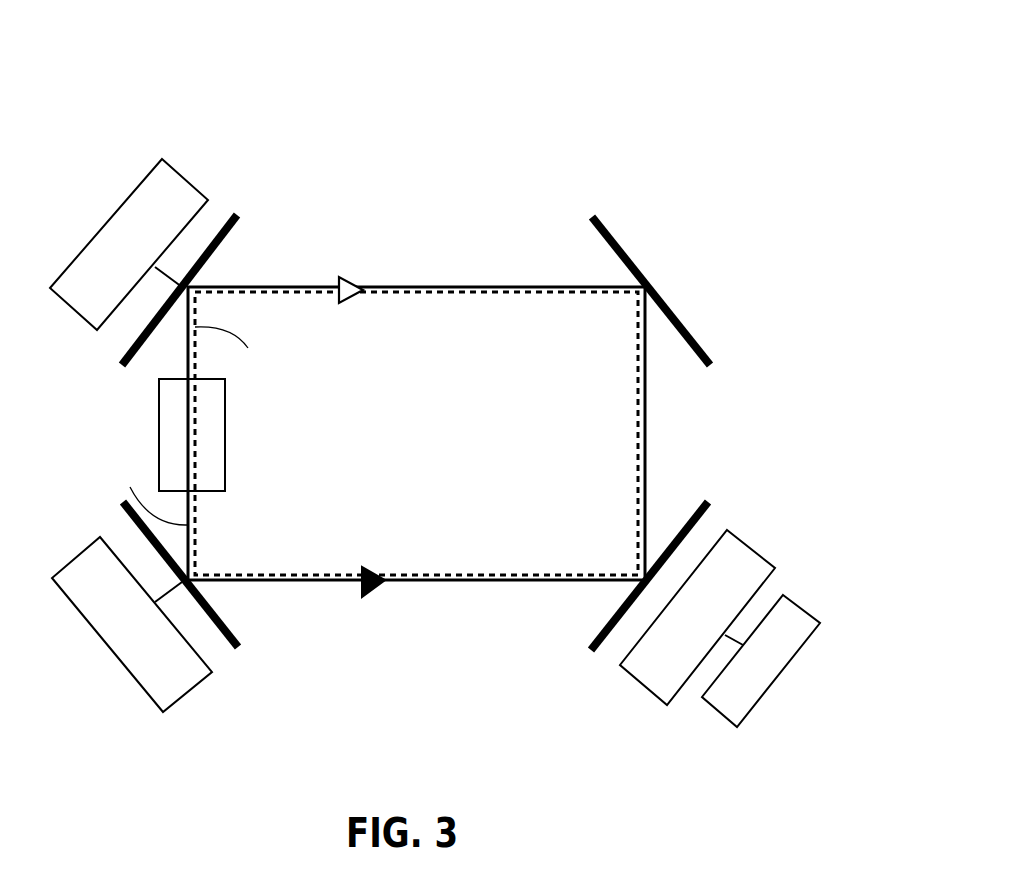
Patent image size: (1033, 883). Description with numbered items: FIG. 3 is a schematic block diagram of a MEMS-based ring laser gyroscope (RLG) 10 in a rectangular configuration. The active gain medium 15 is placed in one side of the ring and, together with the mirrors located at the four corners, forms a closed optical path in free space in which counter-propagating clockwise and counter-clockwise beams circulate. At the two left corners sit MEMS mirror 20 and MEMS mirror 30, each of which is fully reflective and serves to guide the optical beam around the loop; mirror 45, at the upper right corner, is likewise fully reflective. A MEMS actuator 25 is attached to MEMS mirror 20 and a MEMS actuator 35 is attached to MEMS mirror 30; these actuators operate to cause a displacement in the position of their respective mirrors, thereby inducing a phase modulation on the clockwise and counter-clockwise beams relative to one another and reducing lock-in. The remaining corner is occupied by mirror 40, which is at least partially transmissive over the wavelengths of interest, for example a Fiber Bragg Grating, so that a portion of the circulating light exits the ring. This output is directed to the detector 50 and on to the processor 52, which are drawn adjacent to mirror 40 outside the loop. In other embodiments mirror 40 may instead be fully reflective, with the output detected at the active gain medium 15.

The MEMS-based ring laser gyroscope 10 is at (588, 70).
The active gain medium 15 is at (159, 418).
The MEMS mirror 20 is at (230, 238).
The MEMS actuator 25 is at (123, 227).
The MEMS mirror 30 is at (230, 650).
The MEMS actuator 35 is at (125, 635).
The mirror 40 is at (687, 505).
The mirror 45 is at (610, 232).
The detector 50 is at (670, 672).
The processor 52 is at (788, 597).